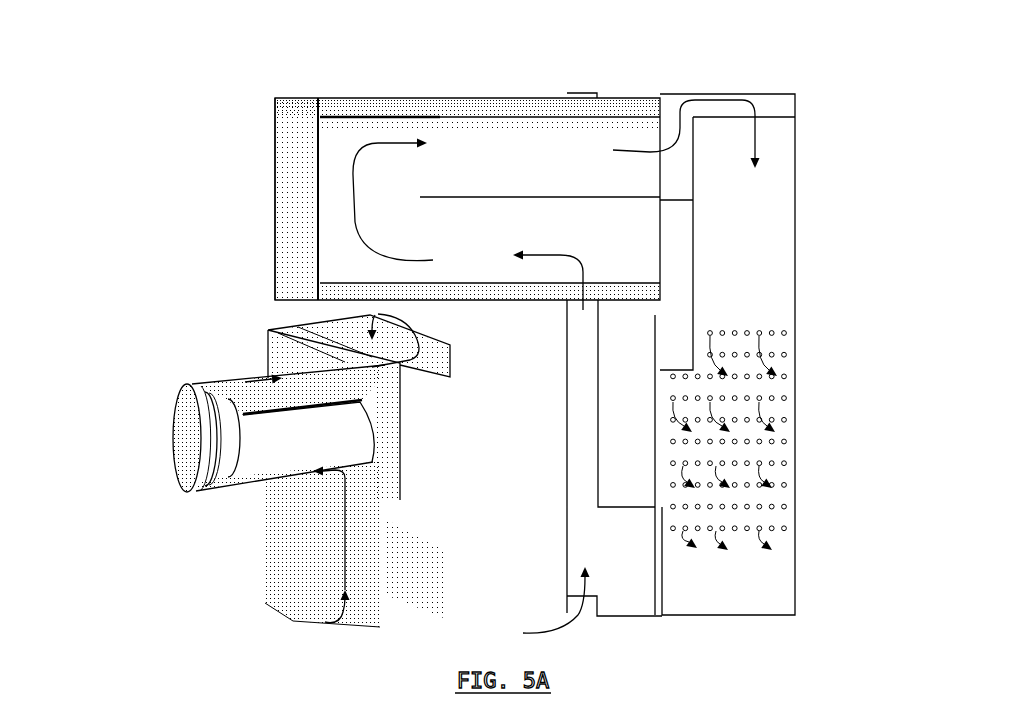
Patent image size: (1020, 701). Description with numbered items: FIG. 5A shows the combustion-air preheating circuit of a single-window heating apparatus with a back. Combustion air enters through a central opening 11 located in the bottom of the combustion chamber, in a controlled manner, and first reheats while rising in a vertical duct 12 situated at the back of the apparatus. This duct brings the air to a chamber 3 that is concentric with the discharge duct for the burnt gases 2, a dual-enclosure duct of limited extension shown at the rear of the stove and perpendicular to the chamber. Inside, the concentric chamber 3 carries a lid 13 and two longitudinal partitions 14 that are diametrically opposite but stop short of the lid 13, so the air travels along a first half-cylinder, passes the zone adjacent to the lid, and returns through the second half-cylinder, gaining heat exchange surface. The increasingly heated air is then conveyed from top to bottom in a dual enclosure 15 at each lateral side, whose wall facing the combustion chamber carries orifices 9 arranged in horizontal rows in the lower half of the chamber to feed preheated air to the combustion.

The discharge duct for the burnt gases 2 is at (203, 448).
The chamber concentric with the discharge duct 3 is at (372, 98).
The orifices 9 is at (788, 483).
The central opening 11 is at (569, 611).
The vertical duct 12 is at (577, 447).
The lid 13 is at (275, 190).
The longitudinal partitions 14 is at (497, 197).
The dual enclosure 15 is at (757, 228).